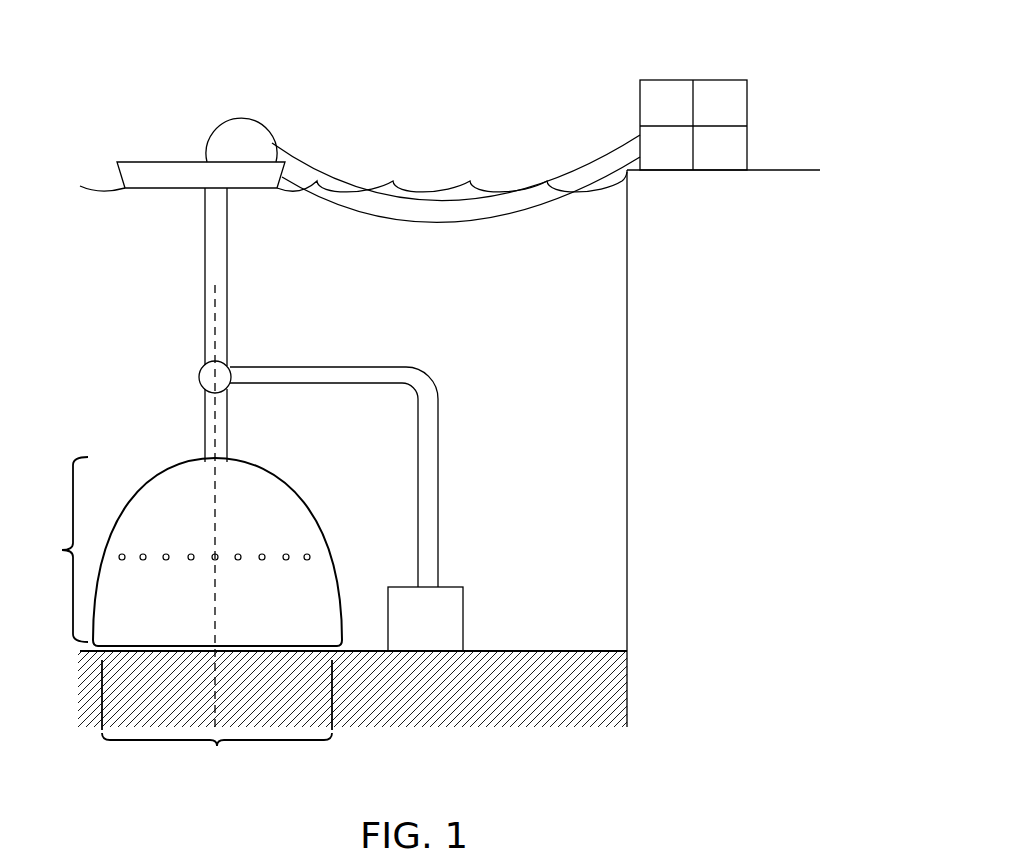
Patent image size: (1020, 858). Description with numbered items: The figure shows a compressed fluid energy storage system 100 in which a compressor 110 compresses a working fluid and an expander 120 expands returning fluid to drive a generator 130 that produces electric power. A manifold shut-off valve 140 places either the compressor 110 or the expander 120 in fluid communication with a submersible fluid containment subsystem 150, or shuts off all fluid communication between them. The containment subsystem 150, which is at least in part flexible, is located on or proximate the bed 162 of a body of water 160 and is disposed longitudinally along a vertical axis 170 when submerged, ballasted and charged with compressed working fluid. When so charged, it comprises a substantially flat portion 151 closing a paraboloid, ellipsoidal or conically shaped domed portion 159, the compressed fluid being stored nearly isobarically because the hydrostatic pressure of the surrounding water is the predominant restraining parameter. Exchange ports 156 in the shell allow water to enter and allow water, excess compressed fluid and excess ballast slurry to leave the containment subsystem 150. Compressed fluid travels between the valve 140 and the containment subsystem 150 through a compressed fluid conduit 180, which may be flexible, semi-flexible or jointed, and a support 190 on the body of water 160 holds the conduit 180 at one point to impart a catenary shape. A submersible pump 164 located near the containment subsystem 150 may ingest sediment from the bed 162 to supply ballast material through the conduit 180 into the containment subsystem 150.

The compressed fluid energy storage system 100 is at (455, 112).
The compressor 110 is at (675, 98).
The expander 120 is at (723, 152).
The generator 130 is at (720, 98).
The manifold shut-off valve 140 is at (648, 155).
The submersible fluid containment subsystem 150 is at (175, 470).
The flat portion 151 is at (217, 718).
The exchange port 156 is at (287, 553).
The domed portion 159 is at (50, 549).
The body of water 160 is at (595, 438).
The bed 162 is at (503, 670).
The submersible pump 164 is at (463, 583).
The vertical axis 170 is at (215, 622).
The compressed fluid conduit 180 is at (327, 137).
The support 190 is at (190, 160).